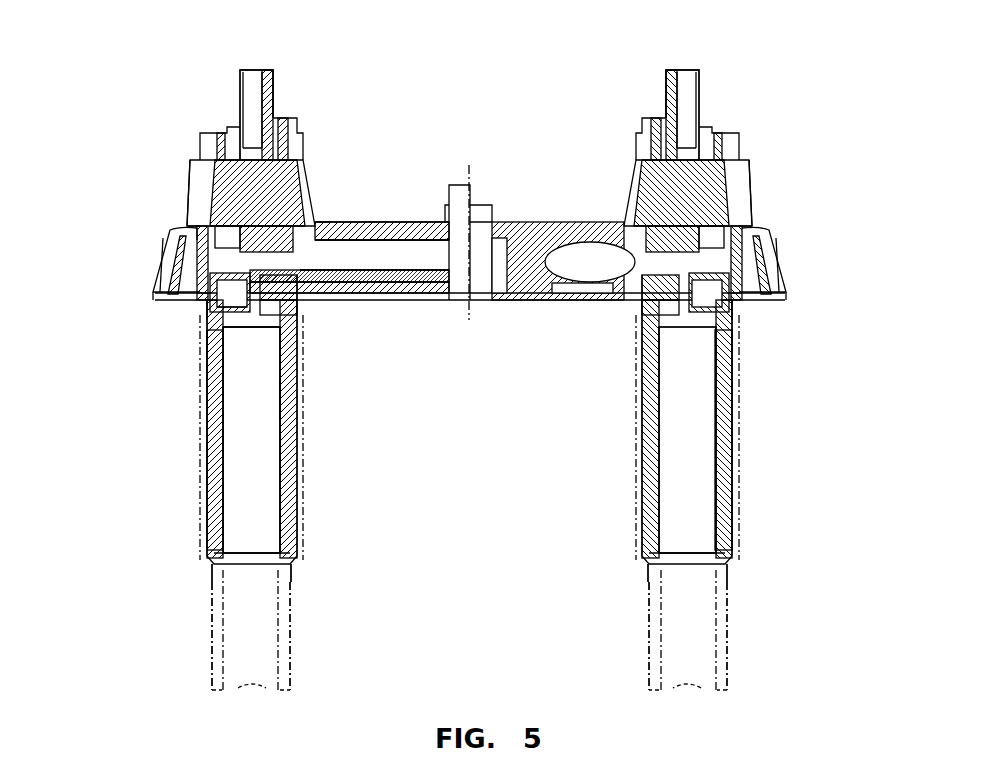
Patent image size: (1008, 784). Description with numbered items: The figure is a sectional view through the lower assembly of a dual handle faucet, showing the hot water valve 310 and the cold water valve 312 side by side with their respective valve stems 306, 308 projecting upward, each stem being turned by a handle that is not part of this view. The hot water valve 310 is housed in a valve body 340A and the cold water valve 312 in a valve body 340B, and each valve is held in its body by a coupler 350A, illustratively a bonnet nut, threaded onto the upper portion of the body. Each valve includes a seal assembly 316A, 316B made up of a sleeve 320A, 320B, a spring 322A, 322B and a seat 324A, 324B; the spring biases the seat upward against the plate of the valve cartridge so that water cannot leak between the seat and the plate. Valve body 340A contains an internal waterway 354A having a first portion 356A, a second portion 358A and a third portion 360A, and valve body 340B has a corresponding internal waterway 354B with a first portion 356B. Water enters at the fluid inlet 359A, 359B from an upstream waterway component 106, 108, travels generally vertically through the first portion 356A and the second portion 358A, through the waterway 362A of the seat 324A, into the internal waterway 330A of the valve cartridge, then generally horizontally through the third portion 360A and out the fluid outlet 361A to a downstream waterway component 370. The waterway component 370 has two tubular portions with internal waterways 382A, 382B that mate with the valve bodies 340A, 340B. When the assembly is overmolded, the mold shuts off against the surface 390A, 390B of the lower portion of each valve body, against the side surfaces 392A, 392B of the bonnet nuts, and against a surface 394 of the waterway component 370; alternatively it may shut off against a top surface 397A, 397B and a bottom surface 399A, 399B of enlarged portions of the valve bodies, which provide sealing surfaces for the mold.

The valve stem 306 is at (238, 72).
The valve stem 308 is at (701, 72).
The hot water valve 310 is at (258, 165).
The cold water valve 312 is at (672, 165).
The coupler 350A is at (210, 147).
The internal waterway 382A is at (387, 256).
The internal waterway 382B is at (615, 255).
The surface 394 is at (443, 204).
The side surface 392A is at (195, 216).
The side surface 392B is at (747, 216).
The fluid outlet 361A is at (320, 248).
The waterway component 370 is at (420, 221).
The top surface 397A is at (200, 222).
The top surface 397B is at (748, 218).
The internal waterway 330A is at (200, 243).
The seat 324A is at (192, 286).
The seat 324B is at (770, 283).
The bottom surface 399A is at (198, 302).
The bottom surface 399B is at (640, 292).
The seal assembly 316A is at (206, 312).
The seal assembly 316B is at (745, 320).
The sleeve 320A is at (213, 340).
The sleeve 320B is at (737, 348).
The second portion 358A is at (236, 327).
The third portion 360A is at (312, 276).
The surface 390A is at (292, 318).
The surface 390B is at (633, 318).
The waterway 362A is at (240, 322).
The spring 322A is at (288, 398).
The spring 322B is at (748, 302).
The first portion 356A is at (258, 463).
The first portion 356B is at (693, 465).
The internal waterway 354A is at (256, 515).
The internal waterway 354B is at (692, 510).
The valve body 340A is at (237, 482).
The valve body 340B is at (677, 482).
The fluid inlet 359A is at (258, 570).
The fluid inlet 359B is at (675, 582).
The upstream waterway component 106 is at (212, 668).
The upstream waterway component 108 is at (728, 652).